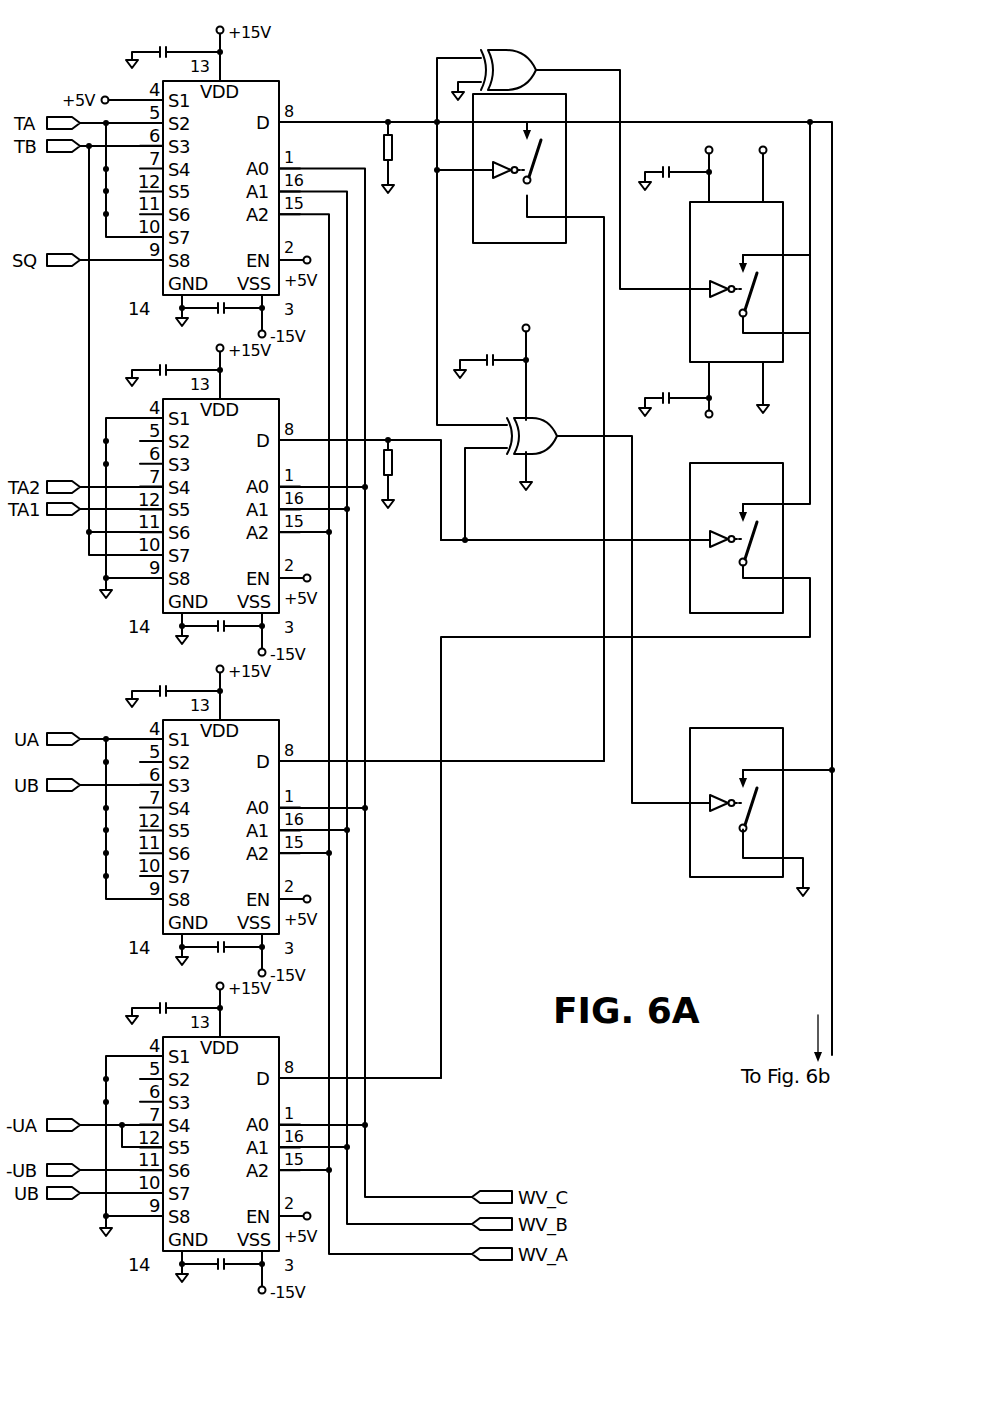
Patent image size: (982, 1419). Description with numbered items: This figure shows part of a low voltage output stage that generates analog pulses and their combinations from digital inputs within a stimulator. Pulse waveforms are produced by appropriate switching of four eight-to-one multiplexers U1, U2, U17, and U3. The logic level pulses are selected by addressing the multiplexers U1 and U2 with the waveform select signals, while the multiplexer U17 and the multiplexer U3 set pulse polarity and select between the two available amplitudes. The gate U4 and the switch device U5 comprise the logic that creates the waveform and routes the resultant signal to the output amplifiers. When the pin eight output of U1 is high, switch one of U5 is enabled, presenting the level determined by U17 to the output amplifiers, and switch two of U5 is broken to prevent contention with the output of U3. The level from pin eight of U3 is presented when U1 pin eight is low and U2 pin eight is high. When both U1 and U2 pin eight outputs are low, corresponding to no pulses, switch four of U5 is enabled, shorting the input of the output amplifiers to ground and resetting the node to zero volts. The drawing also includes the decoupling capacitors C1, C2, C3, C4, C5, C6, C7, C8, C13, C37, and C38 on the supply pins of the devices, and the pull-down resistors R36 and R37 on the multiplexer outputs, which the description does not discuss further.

The 8 to 1 multiplexer U1 is at (227, 184).
The 8 to 1 multiplexer U2 is at (222, 502).
The 8 to 1 multiplexer U17 is at (222, 823).
The 8 to 1 multiplexer U3 is at (222, 1140).
The logic gate U4 is at (518, 255).
The analog switch U5 is at (633, 485).
The capacitor .01uF C1 is at (174, 48).
The capacitor .01uF C2 is at (222, 320).
The capacitor .01uF C3 is at (172, 356).
The capacitor .01uF C4 is at (222, 638).
The capacitor .01uF C5 is at (172, 994).
The capacitor .01uF C6 is at (222, 1276).
The capacitor .01uF C7 is at (491, 343).
The capacitor 0.01uF C8 is at (670, 159).
The capacitor .01uF C13 is at (675, 381).
The capacitor .01uF C37 is at (172, 676).
The capacitor .01uF C38 is at (222, 959).
The resistor 1.0 Meg R36 is at (365, 134).
The resistor 1.0 Meg R37 is at (407, 473).